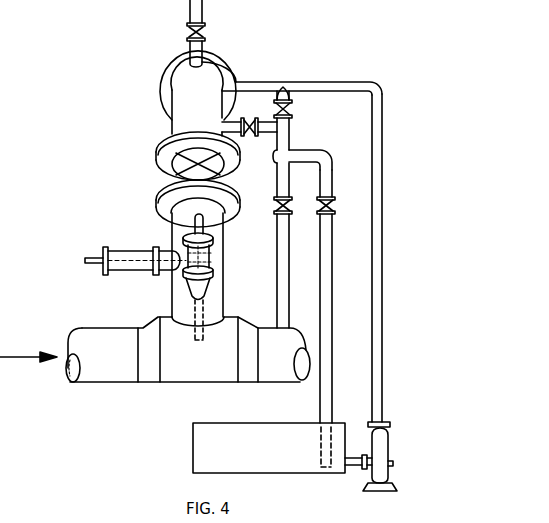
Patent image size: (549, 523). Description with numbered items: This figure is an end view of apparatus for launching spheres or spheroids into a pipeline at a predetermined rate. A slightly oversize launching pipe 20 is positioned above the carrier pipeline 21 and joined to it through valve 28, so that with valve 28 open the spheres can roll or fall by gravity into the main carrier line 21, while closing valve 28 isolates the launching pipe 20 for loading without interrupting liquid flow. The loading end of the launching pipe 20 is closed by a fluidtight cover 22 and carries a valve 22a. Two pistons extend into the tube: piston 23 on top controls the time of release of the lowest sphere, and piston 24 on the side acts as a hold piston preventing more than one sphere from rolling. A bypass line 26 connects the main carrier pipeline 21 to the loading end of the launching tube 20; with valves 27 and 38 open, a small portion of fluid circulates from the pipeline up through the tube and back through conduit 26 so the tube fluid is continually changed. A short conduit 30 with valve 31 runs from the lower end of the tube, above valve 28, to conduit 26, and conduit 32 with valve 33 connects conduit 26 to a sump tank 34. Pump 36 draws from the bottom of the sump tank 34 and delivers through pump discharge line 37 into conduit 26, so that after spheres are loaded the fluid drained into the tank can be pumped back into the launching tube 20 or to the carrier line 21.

The launching pipe 20 is at (180, 121).
The carrier pipeline 21 is at (110, 327).
The cover 22 is at (170, 64).
The valve 22a is at (205, 32).
The piston 23 is at (212, 257).
The piston 24 is at (122, 272).
The bypass line 26 is at (256, 82).
The valve 27 is at (276, 207).
The valve 28 is at (158, 152).
The conduit 30 is at (267, 121).
The valve 31 is at (248, 134).
The conduit 32 is at (331, 163).
The valve 33 is at (334, 206).
The sump tank 34 is at (243, 423).
The pump 36 is at (382, 453).
The pump discharge line 37 is at (383, 361).
The valve 38 is at (293, 101).